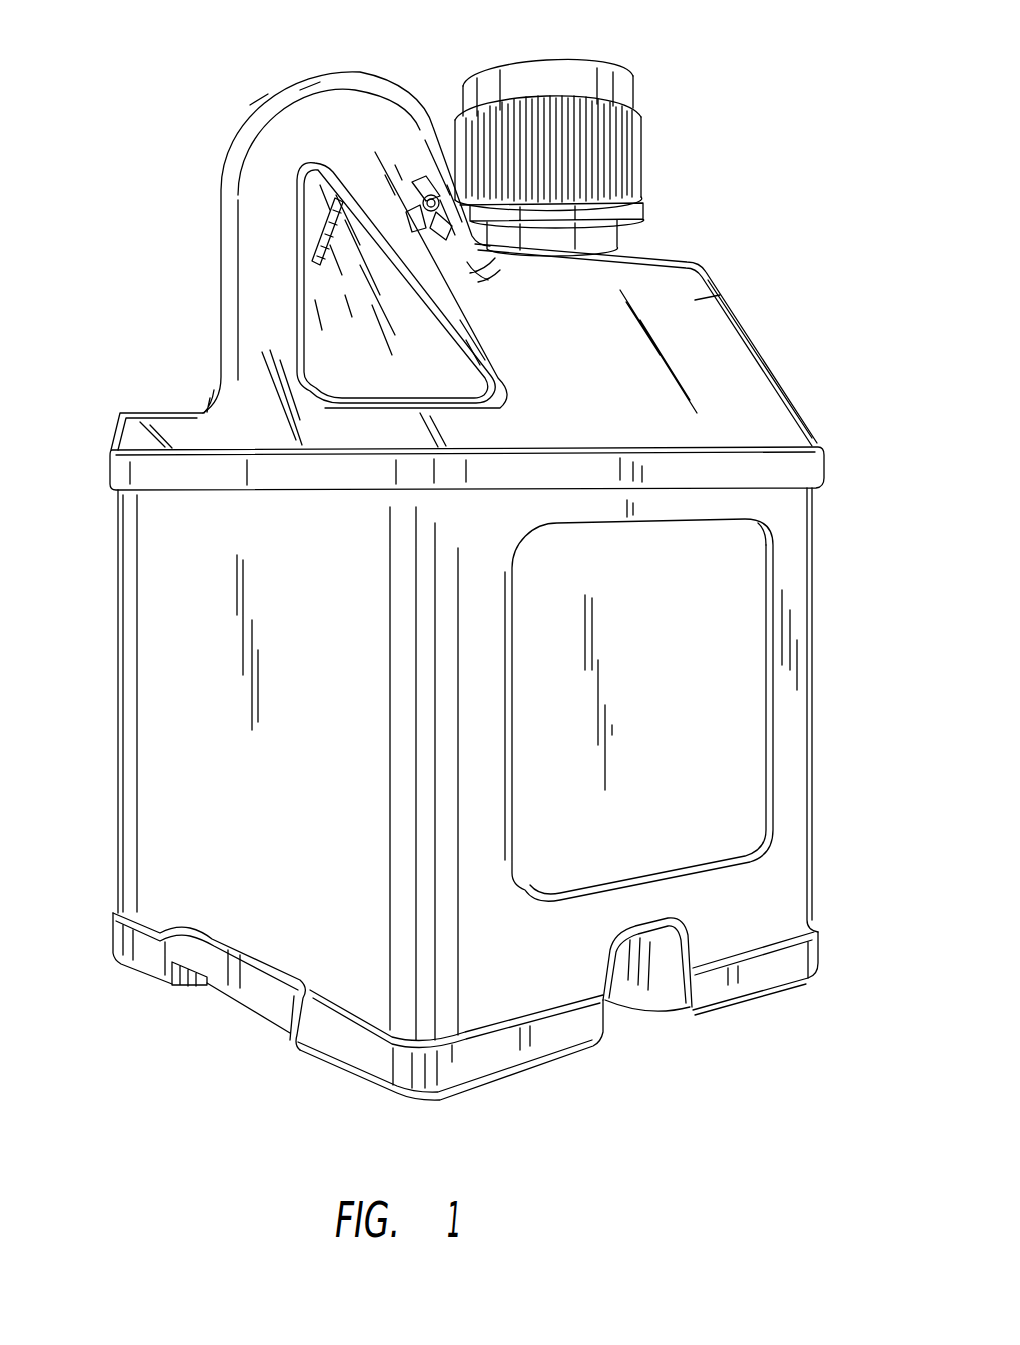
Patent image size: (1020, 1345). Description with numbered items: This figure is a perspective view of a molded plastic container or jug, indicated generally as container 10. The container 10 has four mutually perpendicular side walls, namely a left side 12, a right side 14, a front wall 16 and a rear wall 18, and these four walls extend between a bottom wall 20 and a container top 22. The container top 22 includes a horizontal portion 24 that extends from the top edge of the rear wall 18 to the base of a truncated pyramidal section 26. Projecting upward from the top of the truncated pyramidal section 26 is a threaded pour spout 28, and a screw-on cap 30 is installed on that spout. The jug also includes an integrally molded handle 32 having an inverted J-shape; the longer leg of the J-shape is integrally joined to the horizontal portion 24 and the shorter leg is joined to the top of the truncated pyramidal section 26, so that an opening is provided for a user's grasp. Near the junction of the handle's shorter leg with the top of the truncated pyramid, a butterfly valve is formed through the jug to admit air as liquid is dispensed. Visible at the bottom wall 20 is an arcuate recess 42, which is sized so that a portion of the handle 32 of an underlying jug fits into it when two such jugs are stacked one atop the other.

The molded plastic container 10 is at (758, 187).
The left side 12 is at (118, 553).
The right side 14 is at (743, 640).
The front wall 16 is at (815, 577).
The rear wall 18 is at (165, 700).
The bottom wall 20 is at (768, 995).
The container top 22 is at (733, 366).
The horizontal portion 24 is at (393, 398).
The truncated pyramidal section 26 is at (693, 313).
The threaded pour spout 28 is at (617, 250).
The screw-on cap 30 is at (592, 72).
The handle 32 is at (255, 113).
The arcuate recess 42 is at (653, 965).